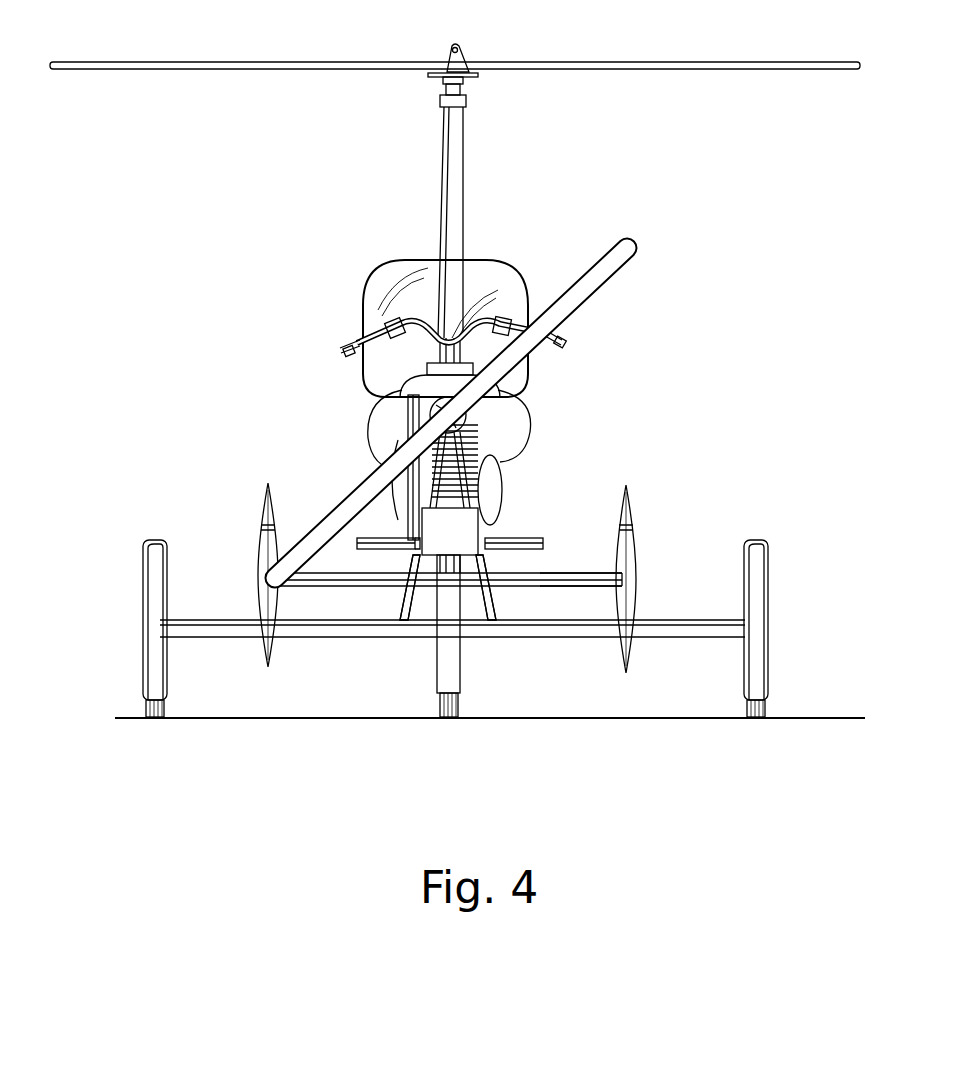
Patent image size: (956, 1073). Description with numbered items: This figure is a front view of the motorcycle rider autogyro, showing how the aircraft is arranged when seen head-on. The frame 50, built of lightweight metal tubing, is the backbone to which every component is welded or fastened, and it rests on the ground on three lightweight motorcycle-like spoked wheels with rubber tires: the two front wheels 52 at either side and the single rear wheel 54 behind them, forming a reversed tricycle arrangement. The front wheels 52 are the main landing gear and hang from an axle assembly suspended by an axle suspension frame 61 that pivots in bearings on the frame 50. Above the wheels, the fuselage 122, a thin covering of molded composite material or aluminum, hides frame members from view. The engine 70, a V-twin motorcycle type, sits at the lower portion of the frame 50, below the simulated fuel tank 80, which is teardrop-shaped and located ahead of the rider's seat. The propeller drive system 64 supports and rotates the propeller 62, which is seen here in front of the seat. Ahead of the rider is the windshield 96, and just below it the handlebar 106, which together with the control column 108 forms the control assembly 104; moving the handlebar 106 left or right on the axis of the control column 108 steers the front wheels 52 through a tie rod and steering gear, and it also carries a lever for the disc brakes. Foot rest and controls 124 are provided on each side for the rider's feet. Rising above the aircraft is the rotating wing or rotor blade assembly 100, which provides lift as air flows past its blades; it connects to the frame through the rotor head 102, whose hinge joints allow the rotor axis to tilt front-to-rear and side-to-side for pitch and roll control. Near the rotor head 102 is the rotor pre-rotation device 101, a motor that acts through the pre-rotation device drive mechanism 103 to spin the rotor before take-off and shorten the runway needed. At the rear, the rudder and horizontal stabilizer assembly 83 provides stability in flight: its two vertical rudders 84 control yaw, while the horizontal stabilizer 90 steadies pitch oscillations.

The rotor blade assembly 100 is at (350, 62).
The rotor pre-rotation device 101 is at (466, 101).
The rotor head 102 is at (440, 84).
The pre-rotation device drive mechanism 103 is at (468, 74).
The windshield 96 is at (500, 282).
The propeller 62 is at (606, 280).
The handlebar 106 is at (385, 326).
The control assembly 104 is at (348, 352).
The simulated fuel tank 80 is at (496, 420).
The propeller drive system 64 is at (408, 418).
The engine 70 is at (486, 447).
The frame 50 is at (460, 483).
The fuselage 122 is at (486, 496).
The foot rest and controls 124 is at (378, 538).
The rudder and horizontal stabilizer assembly 83 is at (318, 578).
The rudder 84 is at (263, 556).
The control column 108 is at (412, 550).
The horizontal stabilizer 90 is at (562, 572).
The axle suspension frame 61 is at (404, 600).
The front wheel 52 is at (148, 708).
The rear wheel 54 is at (436, 706).